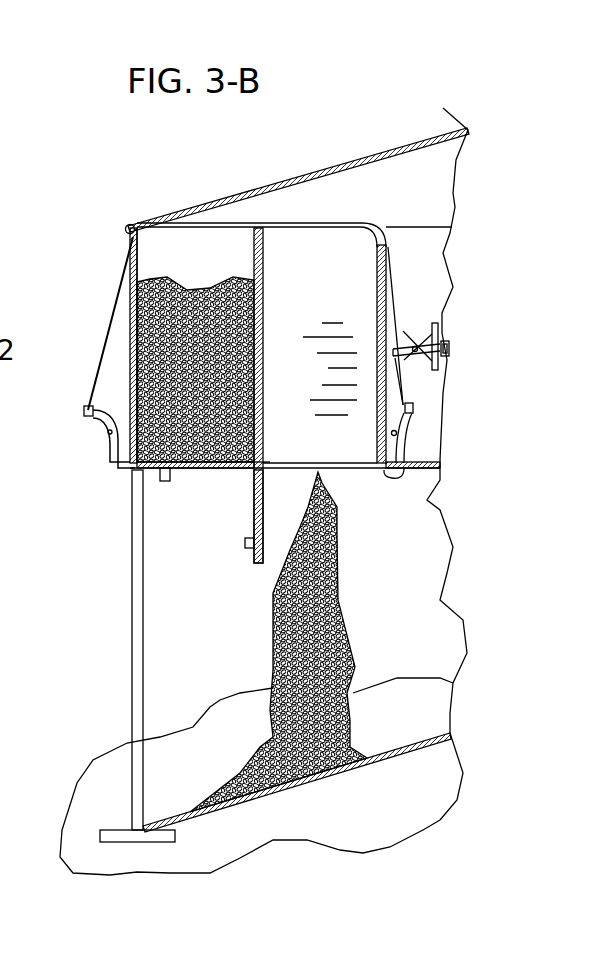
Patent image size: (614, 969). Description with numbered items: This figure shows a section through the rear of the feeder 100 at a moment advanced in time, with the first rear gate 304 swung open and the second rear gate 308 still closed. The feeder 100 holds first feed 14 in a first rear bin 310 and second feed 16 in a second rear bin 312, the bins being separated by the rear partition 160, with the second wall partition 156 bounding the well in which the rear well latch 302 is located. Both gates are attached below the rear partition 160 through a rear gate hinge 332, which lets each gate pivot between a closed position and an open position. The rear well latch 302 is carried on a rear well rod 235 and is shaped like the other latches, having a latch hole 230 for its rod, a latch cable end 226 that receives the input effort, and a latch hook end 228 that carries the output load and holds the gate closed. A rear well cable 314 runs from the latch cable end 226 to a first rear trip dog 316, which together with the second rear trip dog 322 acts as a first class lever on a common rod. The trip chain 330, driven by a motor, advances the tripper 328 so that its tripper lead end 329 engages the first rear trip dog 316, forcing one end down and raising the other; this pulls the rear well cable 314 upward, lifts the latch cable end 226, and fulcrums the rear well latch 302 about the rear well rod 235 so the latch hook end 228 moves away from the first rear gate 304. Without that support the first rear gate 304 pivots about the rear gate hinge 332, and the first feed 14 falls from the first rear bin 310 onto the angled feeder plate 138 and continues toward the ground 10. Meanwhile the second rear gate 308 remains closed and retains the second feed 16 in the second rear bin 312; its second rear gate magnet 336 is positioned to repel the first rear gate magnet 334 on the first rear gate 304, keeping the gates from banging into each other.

The ground 10 is at (397, 816).
The first feed 14 is at (335, 718).
The second feed 16 is at (158, 295).
The feeder 100 is at (384, 153).
The feeder plate 138 is at (263, 793).
The second wall partition 156 is at (387, 268).
The rear partition 160 is at (262, 255).
The latch cable end 226 is at (415, 407).
The latch hook end 228 is at (440, 513).
The latch hole 230 is at (103, 437).
The rear well rod 235 is at (398, 433).
The rear well latch 302 is at (440, 465).
The first rear gate 304 is at (262, 467).
The second rear gate 308 is at (203, 470).
The first rear bin 310 is at (340, 312).
The second rear bin 312 is at (225, 265).
The rear well cable 314 is at (410, 382).
The first rear trip dog 316 is at (438, 356).
The second rear trip dog 322 is at (442, 335).
The tripper 328 is at (436, 322).
The tripper lead end 329 is at (449, 350).
The trip chain 330 is at (449, 345).
The rear gate hinge 332 is at (263, 530).
The first rear gate magnet 334 is at (245, 543).
The second rear gate magnet 336 is at (165, 481).